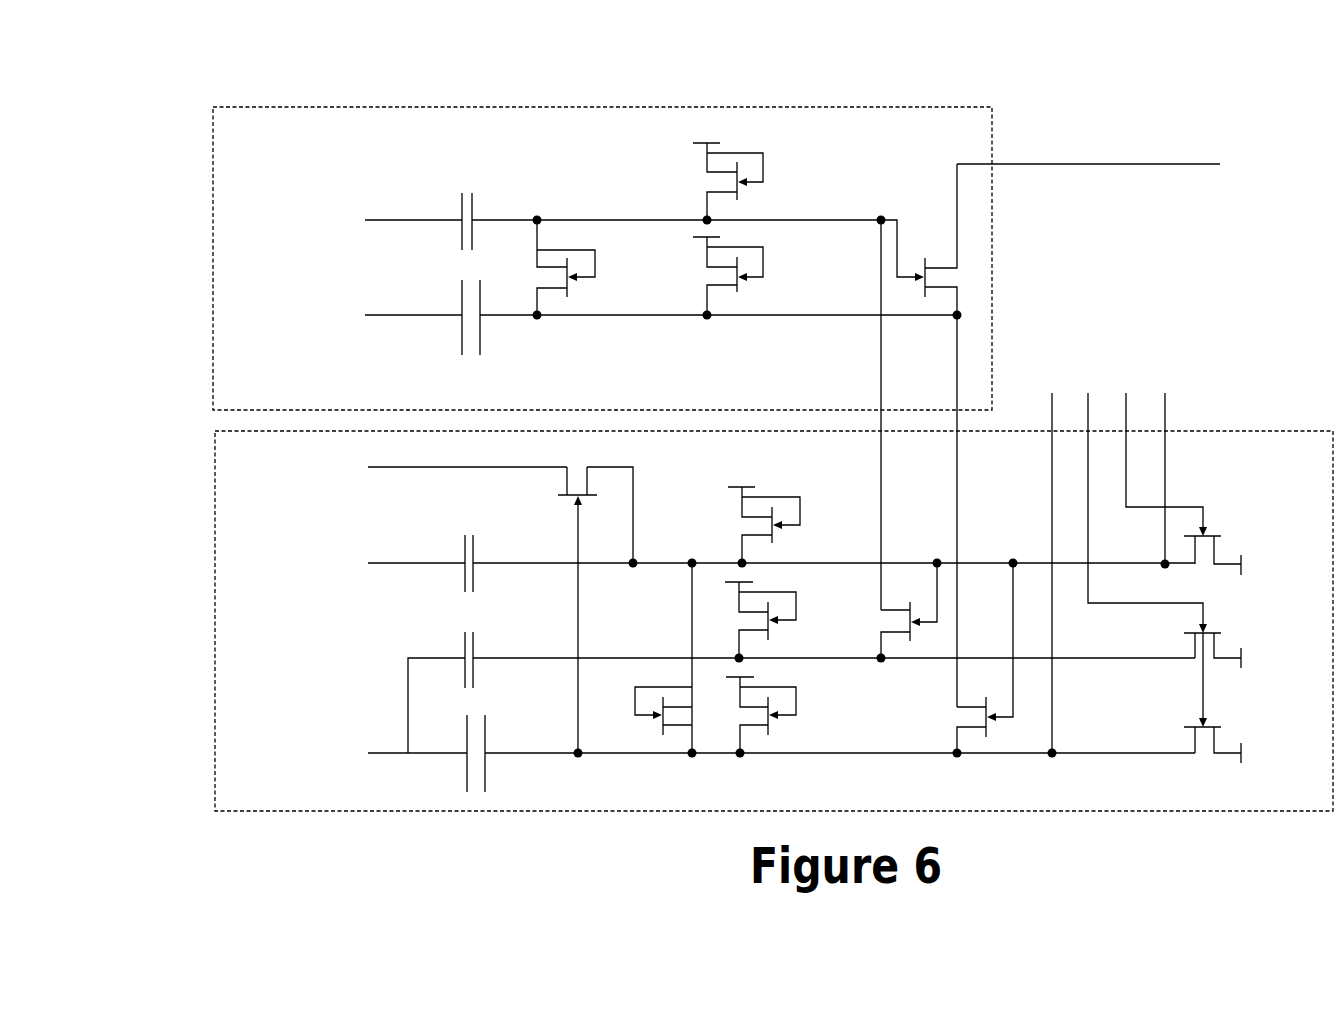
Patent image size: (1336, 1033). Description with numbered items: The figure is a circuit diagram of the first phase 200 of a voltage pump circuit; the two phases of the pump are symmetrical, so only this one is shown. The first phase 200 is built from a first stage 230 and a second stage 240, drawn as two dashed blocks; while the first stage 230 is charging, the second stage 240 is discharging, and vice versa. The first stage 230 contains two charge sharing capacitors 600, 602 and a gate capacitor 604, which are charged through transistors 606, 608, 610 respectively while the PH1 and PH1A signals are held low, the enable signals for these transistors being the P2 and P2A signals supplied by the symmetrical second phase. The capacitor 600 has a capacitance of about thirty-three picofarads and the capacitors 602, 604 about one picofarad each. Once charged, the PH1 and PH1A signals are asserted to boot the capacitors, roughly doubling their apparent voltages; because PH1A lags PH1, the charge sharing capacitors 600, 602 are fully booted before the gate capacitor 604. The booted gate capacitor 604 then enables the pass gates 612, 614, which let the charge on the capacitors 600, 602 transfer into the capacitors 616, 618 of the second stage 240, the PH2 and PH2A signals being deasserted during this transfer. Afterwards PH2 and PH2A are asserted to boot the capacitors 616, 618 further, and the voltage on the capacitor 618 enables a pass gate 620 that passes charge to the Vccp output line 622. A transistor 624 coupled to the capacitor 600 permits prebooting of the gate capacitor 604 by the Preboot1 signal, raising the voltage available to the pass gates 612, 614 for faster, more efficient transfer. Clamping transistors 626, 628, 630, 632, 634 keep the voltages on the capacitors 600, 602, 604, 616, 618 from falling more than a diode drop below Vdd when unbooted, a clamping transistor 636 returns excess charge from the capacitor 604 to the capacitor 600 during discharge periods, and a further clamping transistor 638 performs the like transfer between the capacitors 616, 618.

The first phase 200 is at (145, 89).
The second stage 240 is at (208, 235).
The first stage 230 is at (208, 598).
The charge sharing capacitor 600 is at (487, 772).
The charge sharing capacitor 602 is at (475, 677).
The gate capacitor 604 is at (475, 580).
The transistor 606 is at (1215, 727).
The transistor 608 is at (1215, 632).
The transistor 610 is at (1215, 535).
The pass gate 612 is at (986, 729).
The pass gate 614 is at (903, 637).
The capacitor 616 is at (462, 303).
The capacitor 618 is at (462, 208).
The pass gate 620 is at (943, 267).
The Vccp output line 622 is at (1107, 164).
The transistor 624 is at (567, 500).
The clamping transistor 626 is at (768, 725).
The clamping transistor 628 is at (740, 610).
The clamping transistor 630 is at (742, 507).
The clamping transistor 632 is at (737, 288).
The clamping transistor 634 is at (707, 166).
The clamping transistor 636 is at (665, 703).
The transistor 638 is at (568, 290).